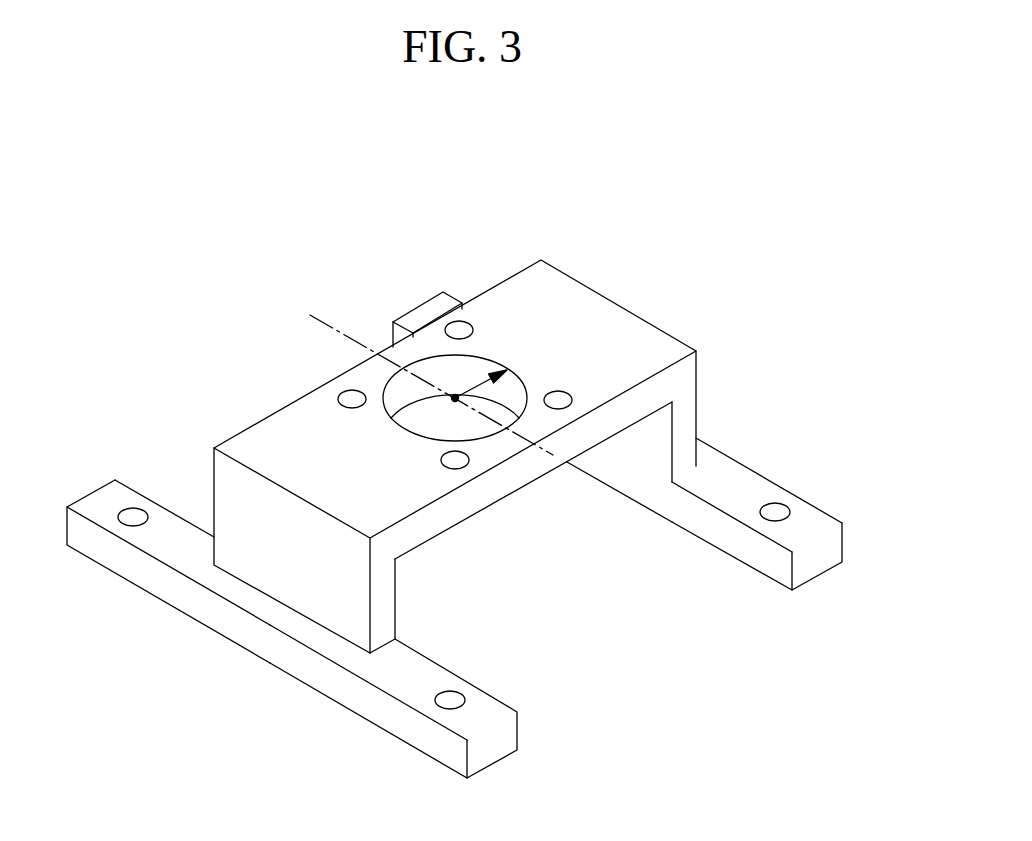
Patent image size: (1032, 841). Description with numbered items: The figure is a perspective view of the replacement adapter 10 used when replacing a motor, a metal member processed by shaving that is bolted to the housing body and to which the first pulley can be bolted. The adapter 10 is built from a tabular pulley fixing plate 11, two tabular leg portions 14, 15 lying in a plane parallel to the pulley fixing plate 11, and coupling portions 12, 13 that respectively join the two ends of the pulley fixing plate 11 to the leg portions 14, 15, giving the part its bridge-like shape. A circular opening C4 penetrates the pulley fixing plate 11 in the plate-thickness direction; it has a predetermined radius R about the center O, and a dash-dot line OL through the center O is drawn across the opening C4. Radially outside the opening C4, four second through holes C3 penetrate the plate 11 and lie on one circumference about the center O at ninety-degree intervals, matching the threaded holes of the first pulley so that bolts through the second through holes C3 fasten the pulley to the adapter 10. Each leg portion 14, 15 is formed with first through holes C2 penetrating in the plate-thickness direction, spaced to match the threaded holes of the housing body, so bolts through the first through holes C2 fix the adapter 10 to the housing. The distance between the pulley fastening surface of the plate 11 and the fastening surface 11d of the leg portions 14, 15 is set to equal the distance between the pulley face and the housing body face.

The replacement adapter 10 is at (661, 194).
The pulley fixing plate 11 is at (532, 290).
The fastening surface 11d is at (496, 503).
The coupling portion 12 is at (688, 415).
The coupling portion 13 is at (213, 482).
The leg portion 14 is at (753, 484).
The leg portion 15 is at (423, 673).
The first through hole C2 is at (783, 512).
The second through hole C3 is at (346, 397).
The opening C4 is at (400, 388).
The center O is at (448, 401).
The optical axis line OL is at (420, 369).
The radius R is at (477, 382).